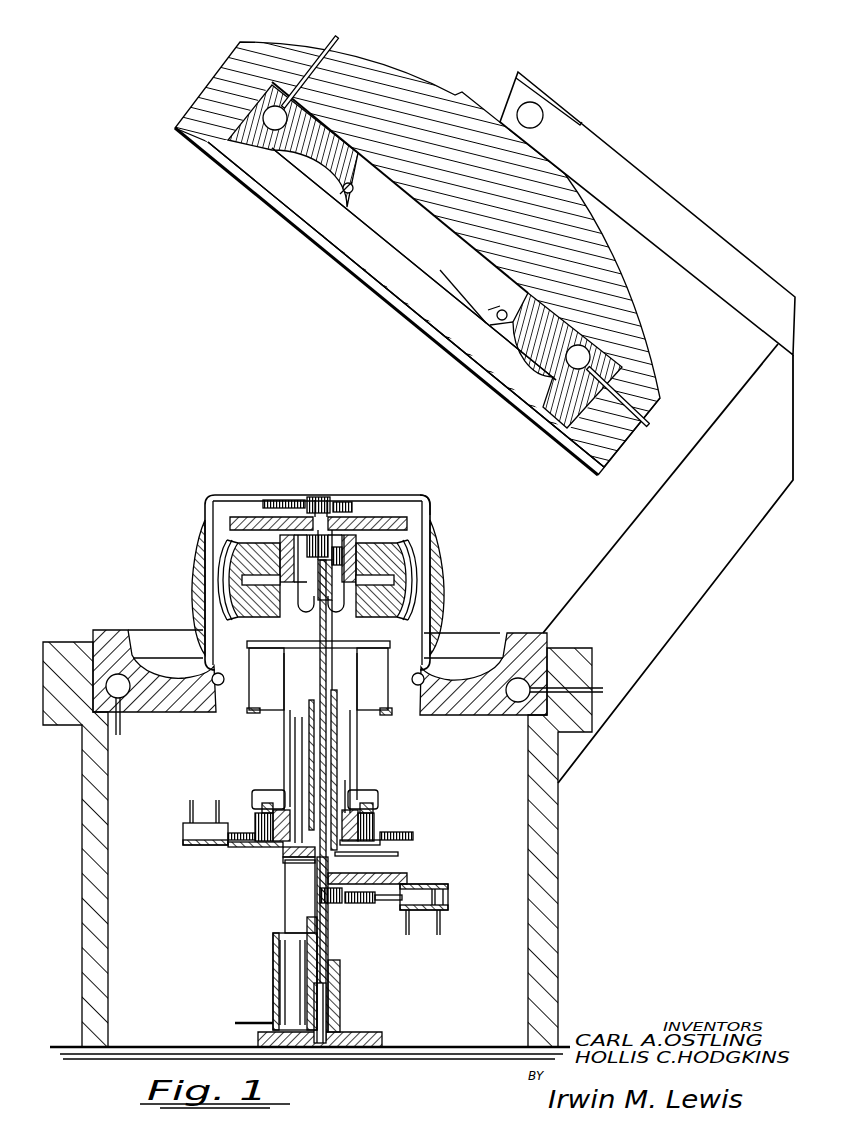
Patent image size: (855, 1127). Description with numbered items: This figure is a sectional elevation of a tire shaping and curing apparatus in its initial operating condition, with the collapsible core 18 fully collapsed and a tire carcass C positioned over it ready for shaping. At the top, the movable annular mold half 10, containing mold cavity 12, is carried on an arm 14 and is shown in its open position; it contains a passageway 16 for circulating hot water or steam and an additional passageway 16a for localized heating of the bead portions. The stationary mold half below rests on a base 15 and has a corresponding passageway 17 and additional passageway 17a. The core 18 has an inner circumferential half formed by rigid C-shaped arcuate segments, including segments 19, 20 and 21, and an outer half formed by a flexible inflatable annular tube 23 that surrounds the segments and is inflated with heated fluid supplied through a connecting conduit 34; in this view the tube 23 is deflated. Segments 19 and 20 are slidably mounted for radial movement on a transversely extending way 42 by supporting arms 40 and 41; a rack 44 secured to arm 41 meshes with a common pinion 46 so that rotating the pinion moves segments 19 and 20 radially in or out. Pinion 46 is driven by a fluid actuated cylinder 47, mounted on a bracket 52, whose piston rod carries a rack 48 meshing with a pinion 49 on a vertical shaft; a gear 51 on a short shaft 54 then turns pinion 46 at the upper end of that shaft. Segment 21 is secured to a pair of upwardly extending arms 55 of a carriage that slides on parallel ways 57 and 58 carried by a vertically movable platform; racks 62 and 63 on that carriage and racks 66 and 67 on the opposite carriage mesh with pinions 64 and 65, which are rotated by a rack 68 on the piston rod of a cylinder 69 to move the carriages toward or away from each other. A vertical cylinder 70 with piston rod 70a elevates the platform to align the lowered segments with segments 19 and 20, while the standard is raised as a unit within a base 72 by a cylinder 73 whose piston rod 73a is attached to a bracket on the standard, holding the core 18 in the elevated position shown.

The movable annular mold half 10 is at (232, 162).
The mold cavity 12 is at (280, 178).
The arm 14 is at (611, 162).
The base 15 is at (55, 720).
The passageway 16 is at (230, 112).
The additional passageway 16a is at (320, 205).
The passageway 17 is at (125, 708).
The additional passageway 17a is at (223, 712).
The collapsible curing form or core assembly 18 is at (429, 546).
The arcuate segment 19 is at (262, 540).
The arcuate segment 20 is at (432, 505).
The arcuate segment 21 is at (395, 645).
The flexible inflatable annular tube 23 is at (402, 570).
The connecting conduit 34 is at (400, 597).
The supporting arm 40 is at (282, 548).
The supporting arm 41 is at (382, 532).
The way 42 is at (366, 520).
The rack 44 is at (283, 500).
The pinion 46 is at (317, 497).
The fluid actuated cylinder 47 is at (448, 890).
The rack 48 is at (363, 908).
The pinion 49 is at (340, 906).
The gear 51 is at (345, 508).
The bracket 52 is at (383, 900).
The shaft 54 is at (333, 500).
The upwardly extending arms 55 is at (319, 681).
The way 57 is at (267, 797).
The way 58 is at (378, 802).
The rack 62 is at (280, 860).
The rack 63 is at (380, 823).
The pinion 64 is at (267, 845).
The pinion 65 is at (380, 854).
The rack 66 is at (350, 793).
The rack 67 is at (256, 822).
The rack 68 is at (250, 843).
The fluid actuated cylinder 69 is at (183, 842).
The fluid actuated cylinder 70 is at (284, 748).
The piston rod 70a is at (302, 732).
The base 72 is at (342, 997).
The fluid actuated cylinder 73 is at (275, 973).
The piston rod 73a is at (290, 910).
The tire carcass C is at (430, 550).